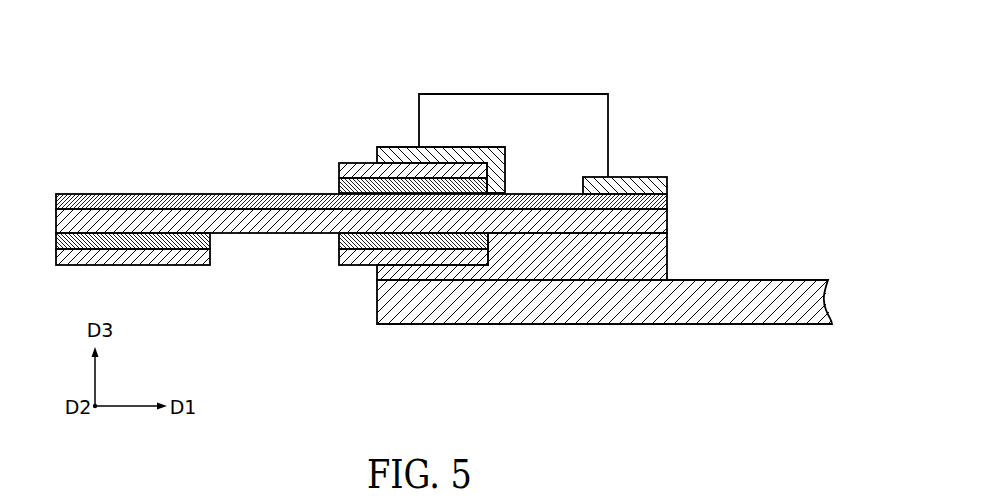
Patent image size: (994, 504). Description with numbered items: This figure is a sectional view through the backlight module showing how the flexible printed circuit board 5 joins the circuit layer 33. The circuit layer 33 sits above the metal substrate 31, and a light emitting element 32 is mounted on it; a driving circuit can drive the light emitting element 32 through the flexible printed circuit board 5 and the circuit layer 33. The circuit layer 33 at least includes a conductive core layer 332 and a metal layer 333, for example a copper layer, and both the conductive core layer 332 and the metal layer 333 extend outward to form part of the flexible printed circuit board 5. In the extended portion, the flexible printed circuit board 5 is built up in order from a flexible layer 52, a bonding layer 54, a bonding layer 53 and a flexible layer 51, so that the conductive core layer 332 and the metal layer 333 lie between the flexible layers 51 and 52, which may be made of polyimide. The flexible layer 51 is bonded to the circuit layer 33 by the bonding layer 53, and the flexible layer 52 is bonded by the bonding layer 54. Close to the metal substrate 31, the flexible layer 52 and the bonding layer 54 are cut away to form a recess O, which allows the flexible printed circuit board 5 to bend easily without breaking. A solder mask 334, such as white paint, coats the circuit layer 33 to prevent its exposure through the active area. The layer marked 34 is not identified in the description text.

The flexible printed circuit board 5 is at (401, 185).
The metal substrate 31 is at (762, 293).
The light emitting element 32 is at (540, 93).
The circuit layer 33 is at (640, 177).
The conductive core layer 332 is at (667, 218).
The metal layer 333 is at (667, 199).
The solder mask 334 is at (667, 185).
The support layer 34 is at (667, 255).
The flexible layer 51 is at (339, 170).
The flexible layer 52 is at (358, 257).
The bonding layer 53 is at (339, 189).
The bonding layer 54 is at (339, 241).
The recess O is at (245, 263).